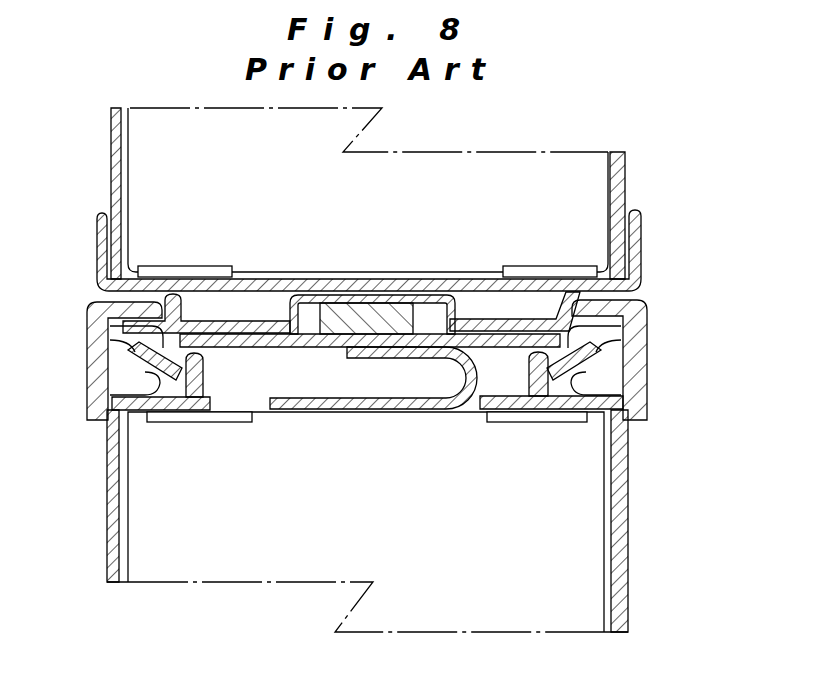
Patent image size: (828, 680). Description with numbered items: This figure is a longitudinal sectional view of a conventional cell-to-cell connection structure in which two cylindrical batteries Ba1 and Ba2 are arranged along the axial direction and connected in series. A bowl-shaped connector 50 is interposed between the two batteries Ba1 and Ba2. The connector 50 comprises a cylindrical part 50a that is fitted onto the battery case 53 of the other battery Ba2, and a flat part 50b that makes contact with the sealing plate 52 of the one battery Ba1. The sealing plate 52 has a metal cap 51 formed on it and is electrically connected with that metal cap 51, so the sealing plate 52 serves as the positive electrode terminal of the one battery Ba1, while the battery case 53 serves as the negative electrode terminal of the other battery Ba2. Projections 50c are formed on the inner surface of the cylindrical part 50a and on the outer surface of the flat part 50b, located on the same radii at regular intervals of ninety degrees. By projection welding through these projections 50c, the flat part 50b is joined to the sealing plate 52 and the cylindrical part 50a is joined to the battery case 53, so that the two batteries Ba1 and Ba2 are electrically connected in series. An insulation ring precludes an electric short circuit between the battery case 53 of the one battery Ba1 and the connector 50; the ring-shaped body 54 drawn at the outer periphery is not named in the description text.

The bowl-shaped connector 50 is at (535, 313).
The cylindrical part 50a is at (638, 274).
The flat part 50b is at (228, 325).
The projections 50c is at (110, 238).
The metal cap 51 is at (445, 297).
The sealing plate 52 is at (316, 350).
The battery case 53 is at (623, 192).
The sealing ring 54 is at (95, 353).
The battery Ba1 is at (629, 554).
The battery Ba2 is at (629, 169).